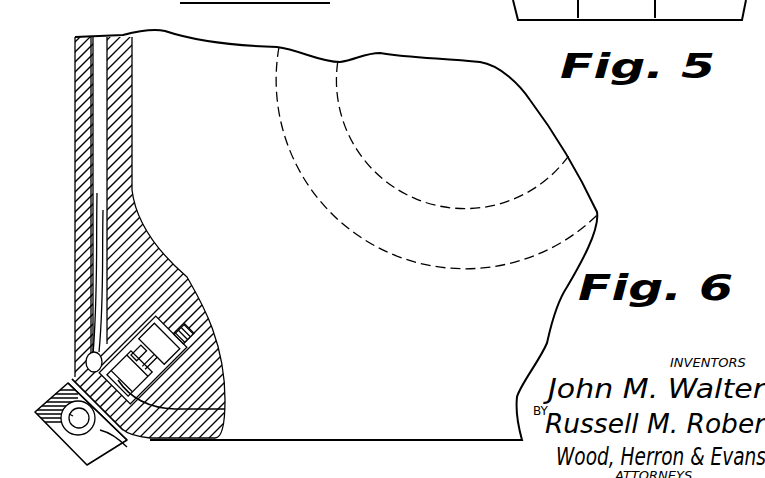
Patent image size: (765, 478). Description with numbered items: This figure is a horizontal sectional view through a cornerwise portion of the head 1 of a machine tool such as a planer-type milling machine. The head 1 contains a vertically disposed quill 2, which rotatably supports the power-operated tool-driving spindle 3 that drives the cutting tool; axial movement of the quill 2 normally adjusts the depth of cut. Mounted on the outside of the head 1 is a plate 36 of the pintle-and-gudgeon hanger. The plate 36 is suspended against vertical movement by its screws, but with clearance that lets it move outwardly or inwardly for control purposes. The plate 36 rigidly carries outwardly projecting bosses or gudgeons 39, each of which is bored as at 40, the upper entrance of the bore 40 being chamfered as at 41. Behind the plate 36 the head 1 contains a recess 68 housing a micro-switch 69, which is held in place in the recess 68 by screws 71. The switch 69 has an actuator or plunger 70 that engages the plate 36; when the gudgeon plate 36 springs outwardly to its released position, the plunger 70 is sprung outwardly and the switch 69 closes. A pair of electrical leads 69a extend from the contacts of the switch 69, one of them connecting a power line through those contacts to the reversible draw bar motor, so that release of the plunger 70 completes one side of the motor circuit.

The head 1 is at (160, 42).
The quill 2 is at (277, 95).
The tool-driving spindle 3 is at (368, 82).
The plate 36 is at (72, 380).
The gudgeons 39 is at (73, 452).
The bore 40 is at (66, 423).
The chamfer 41 is at (123, 444).
The recess 68 is at (137, 333).
The micro-switch 69 is at (225, 408).
The electrical leads 69a is at (100, 283).
The actuator 70 is at (95, 350).
The screws 71 is at (187, 338).